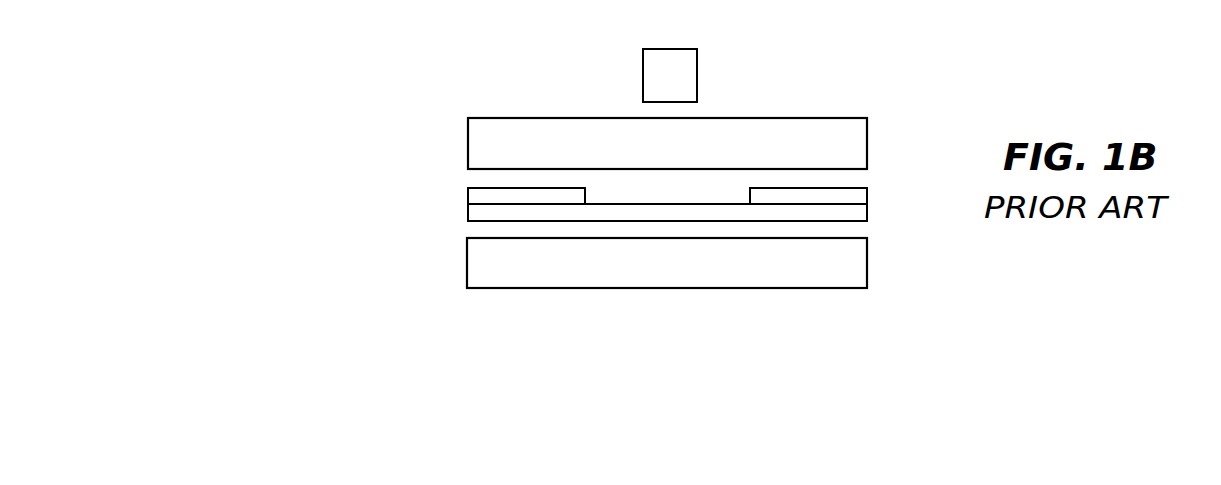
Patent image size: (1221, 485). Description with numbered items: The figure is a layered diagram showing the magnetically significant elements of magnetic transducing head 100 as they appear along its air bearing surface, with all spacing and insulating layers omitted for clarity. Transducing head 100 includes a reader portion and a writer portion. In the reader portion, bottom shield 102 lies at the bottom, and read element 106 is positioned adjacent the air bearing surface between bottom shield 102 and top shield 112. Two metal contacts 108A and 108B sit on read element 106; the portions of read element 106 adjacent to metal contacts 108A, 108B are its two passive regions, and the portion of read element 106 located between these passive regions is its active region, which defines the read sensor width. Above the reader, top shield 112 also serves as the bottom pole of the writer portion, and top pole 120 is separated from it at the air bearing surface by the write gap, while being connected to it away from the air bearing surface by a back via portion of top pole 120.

The transducing head 100 is at (538, 80).
The bottom shield 102 is at (667, 263).
The read element 106 is at (494, 219).
The metal contact 108A is at (492, 198).
The metal contact 108B is at (847, 198).
The top shield 112 is at (667, 143).
The top pole 120 is at (670, 75).